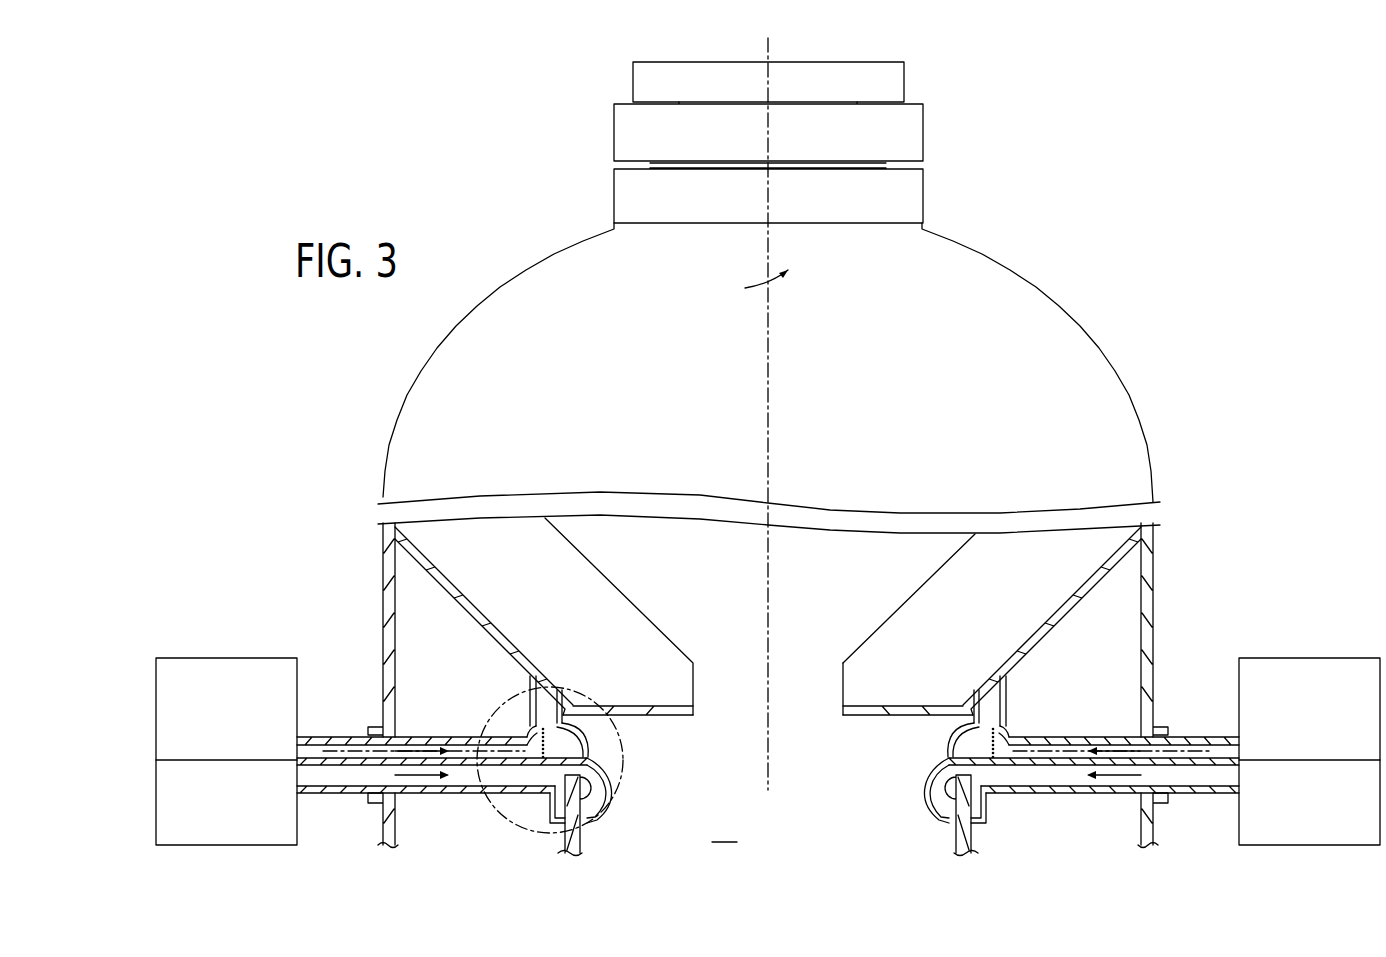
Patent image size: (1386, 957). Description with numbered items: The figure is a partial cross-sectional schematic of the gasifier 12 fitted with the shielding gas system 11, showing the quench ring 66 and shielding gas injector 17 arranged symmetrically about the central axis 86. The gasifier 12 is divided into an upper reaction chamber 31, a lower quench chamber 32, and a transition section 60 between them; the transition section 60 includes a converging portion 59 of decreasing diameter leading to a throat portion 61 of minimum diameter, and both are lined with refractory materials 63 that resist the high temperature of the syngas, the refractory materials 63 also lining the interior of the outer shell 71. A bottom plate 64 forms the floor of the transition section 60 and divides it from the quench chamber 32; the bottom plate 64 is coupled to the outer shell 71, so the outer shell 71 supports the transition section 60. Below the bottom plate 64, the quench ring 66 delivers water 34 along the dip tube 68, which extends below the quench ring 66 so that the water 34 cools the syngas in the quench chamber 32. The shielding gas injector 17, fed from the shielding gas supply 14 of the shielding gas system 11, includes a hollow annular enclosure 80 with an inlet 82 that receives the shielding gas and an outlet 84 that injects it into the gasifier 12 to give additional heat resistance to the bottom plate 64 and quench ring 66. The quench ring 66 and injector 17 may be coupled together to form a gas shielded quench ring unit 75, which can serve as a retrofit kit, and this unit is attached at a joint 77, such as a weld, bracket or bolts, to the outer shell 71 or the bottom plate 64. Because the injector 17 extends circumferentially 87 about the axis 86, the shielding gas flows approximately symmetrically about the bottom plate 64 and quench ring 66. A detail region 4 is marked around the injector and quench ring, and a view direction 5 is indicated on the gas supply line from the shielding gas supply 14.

The detail view circle 4 is at (625, 703).
The shielding gas flow direction 5 is at (323, 751).
The shielding gas system 11 is at (221, 648).
The gasifier 12 is at (1030, 203).
The shielding gas supply 14 is at (265, 658).
The shielding gas injector 17 is at (450, 793).
The reaction chamber 31 is at (870, 379).
The quench chamber 32 is at (725, 831).
The water 34 is at (226, 846).
The converging portion 59 is at (910, 600).
The transition section 60 is at (512, 602).
The throat portion 61 is at (843, 690).
The refractory materials 63 is at (581, 640).
The bottom plate 64 is at (627, 706).
The quench ring 66 is at (610, 782).
The dip tube 68 is at (582, 836).
The outer shell 71 is at (381, 547).
The gas shielded quench ring unit 75 is at (545, 838).
The joint 77 is at (533, 700).
The hollow annular enclosure 80 is at (512, 800).
The inlet 82 is at (530, 730).
The outlet 84 is at (592, 758).
The central axis 86 is at (772, 50).
The circumferential direction 87 is at (784, 282).